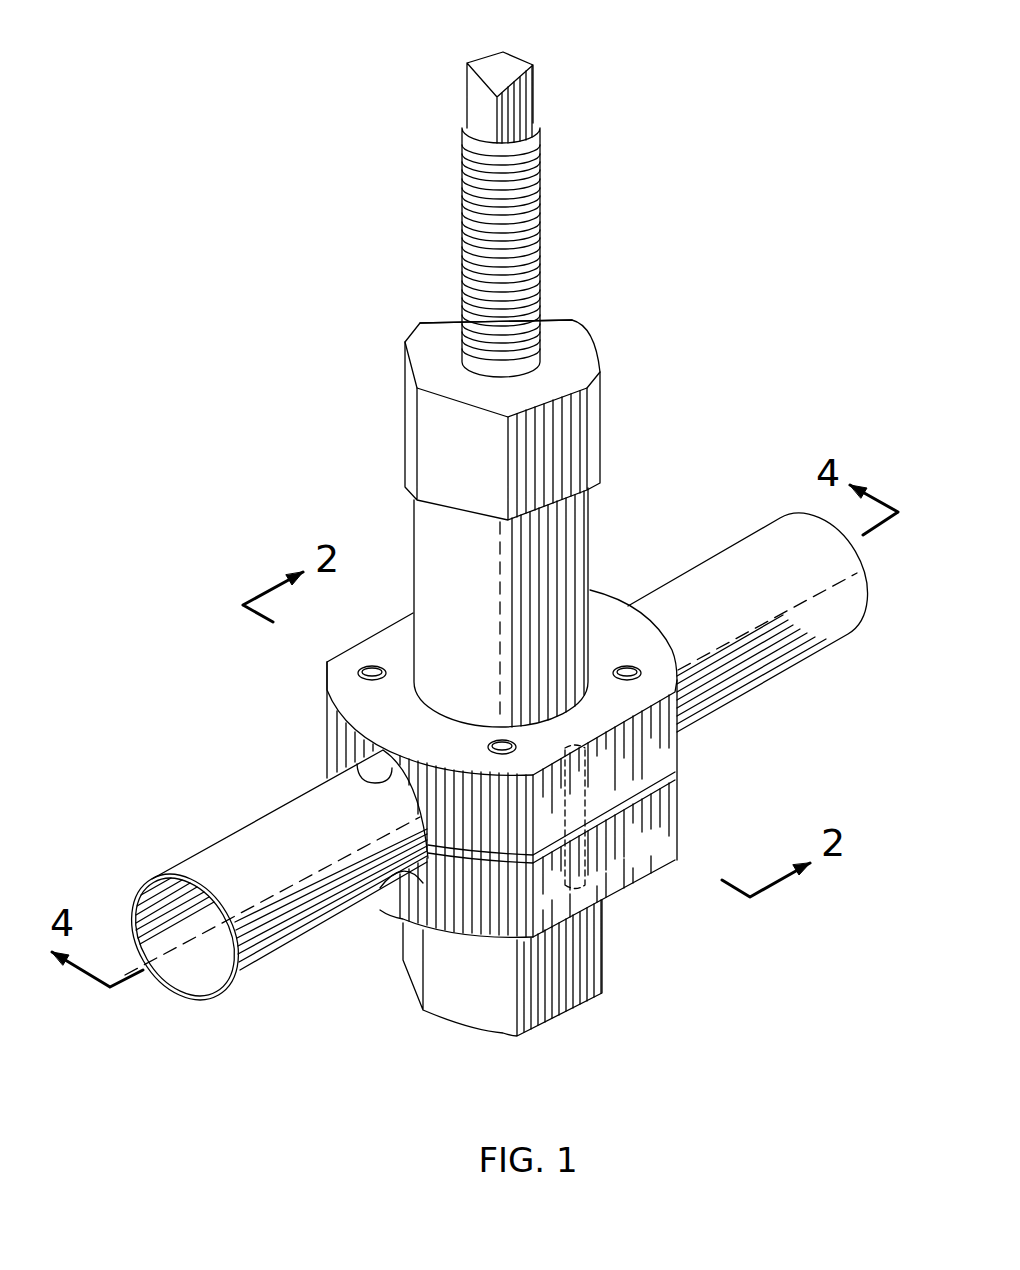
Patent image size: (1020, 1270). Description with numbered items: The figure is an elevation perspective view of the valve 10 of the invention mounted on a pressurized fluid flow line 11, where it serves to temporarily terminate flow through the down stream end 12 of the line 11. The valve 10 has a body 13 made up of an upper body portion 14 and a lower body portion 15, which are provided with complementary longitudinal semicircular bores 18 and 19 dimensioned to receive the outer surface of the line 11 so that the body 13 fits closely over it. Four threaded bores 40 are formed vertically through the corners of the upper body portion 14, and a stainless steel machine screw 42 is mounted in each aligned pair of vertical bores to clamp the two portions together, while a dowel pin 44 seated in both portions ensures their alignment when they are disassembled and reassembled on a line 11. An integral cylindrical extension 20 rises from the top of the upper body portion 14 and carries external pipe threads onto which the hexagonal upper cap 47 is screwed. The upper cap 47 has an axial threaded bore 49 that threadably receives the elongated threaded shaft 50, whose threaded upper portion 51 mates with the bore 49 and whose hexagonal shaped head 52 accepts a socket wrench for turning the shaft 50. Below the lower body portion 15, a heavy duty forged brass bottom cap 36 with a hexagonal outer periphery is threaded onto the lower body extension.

The valve 10 is at (305, 718).
The fluid flow line 11 is at (724, 563).
The down stream end 12 is at (233, 853).
The body 13 is at (608, 592).
The upper body portion 14 is at (665, 752).
The lower body portion 15 is at (675, 832).
The semicircular bore 18 is at (367, 768).
The semicircular bore 19 is at (382, 883).
The integral cylindrical extension 20 is at (578, 517).
The bottom cap 36 is at (603, 965).
The threaded bores 40 is at (385, 673).
The machine screw 42 is at (363, 667).
The dowel pin 44 is at (621, 896).
The upper cap 47 is at (465, 407).
The axial threaded bore 49 is at (463, 352).
The threaded shaft 50 is at (454, 252).
The threaded upper portion 51 is at (463, 253).
The hexagonal shaped head 52 is at (481, 104).